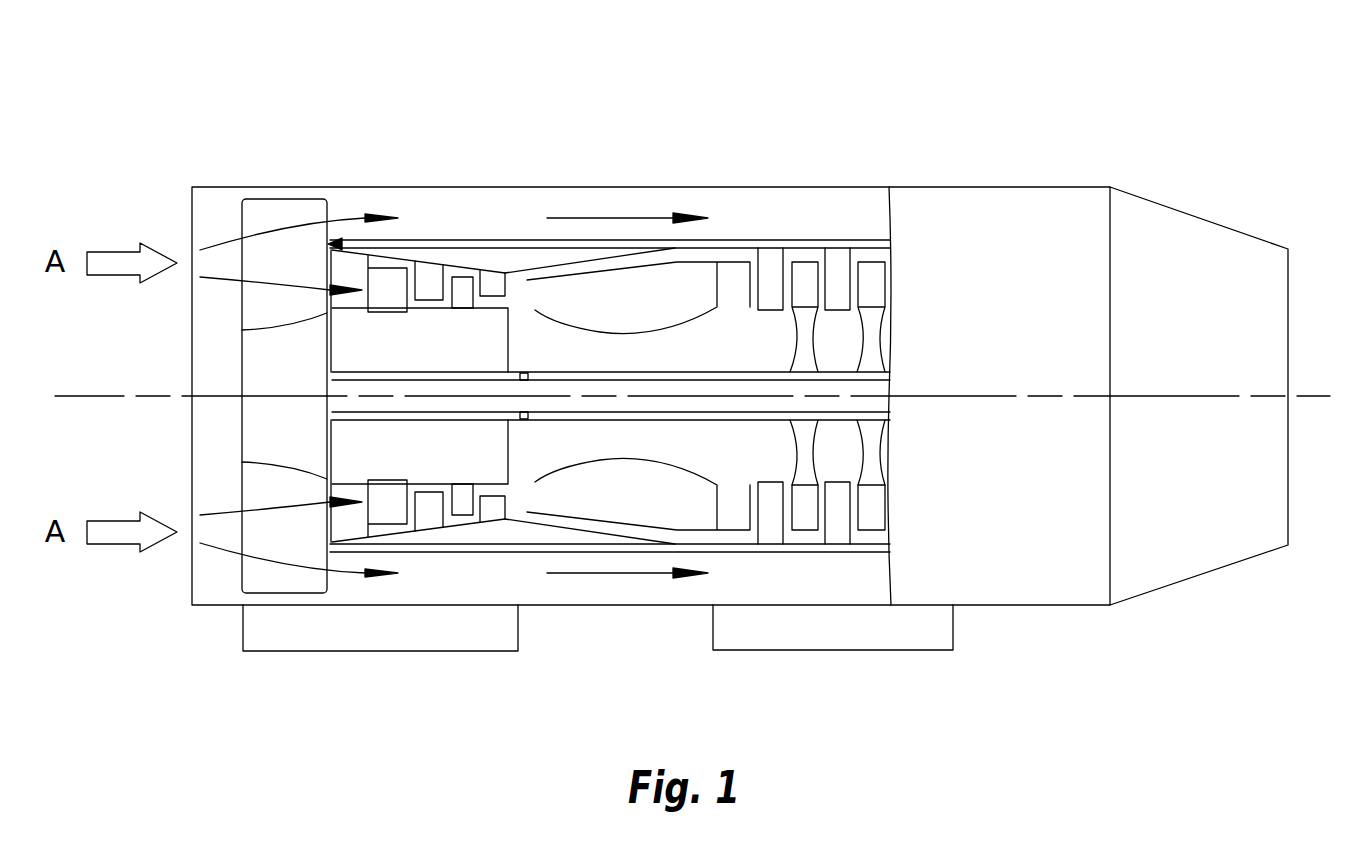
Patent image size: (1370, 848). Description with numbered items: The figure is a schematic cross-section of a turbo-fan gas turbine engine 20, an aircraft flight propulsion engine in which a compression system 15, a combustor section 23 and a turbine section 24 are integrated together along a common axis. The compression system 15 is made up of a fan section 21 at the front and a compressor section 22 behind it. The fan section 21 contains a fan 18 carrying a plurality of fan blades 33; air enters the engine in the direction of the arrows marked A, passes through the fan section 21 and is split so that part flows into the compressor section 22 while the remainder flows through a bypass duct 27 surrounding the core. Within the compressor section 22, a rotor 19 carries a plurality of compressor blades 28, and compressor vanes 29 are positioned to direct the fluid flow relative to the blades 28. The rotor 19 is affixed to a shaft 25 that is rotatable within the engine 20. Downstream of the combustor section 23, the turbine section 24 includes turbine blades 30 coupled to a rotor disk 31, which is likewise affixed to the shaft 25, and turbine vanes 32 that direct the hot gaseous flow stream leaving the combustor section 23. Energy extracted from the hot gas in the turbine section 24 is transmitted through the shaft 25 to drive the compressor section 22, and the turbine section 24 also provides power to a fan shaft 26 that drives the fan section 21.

The compression system 15 is at (417, 651).
The fan 18 is at (278, 434).
The rotor 19 is at (360, 353).
The gas turbine engine 20 is at (910, 82).
The fan section 21 is at (272, 577).
The compressor section 22 is at (410, 520).
The combustor section 23 is at (593, 243).
The turbine section 24 is at (907, 651).
The shaft 25 is at (524, 372).
The fan shaft 26 is at (633, 420).
The bypass duct 27 is at (353, 587).
The compressor blades 28 is at (393, 287).
The compressor vanes 29 is at (343, 255).
The turbine blades 30 is at (802, 513).
The rotor disk 31 is at (805, 450).
The turbine vanes 32 is at (770, 532).
The fan blades 33 is at (268, 268).